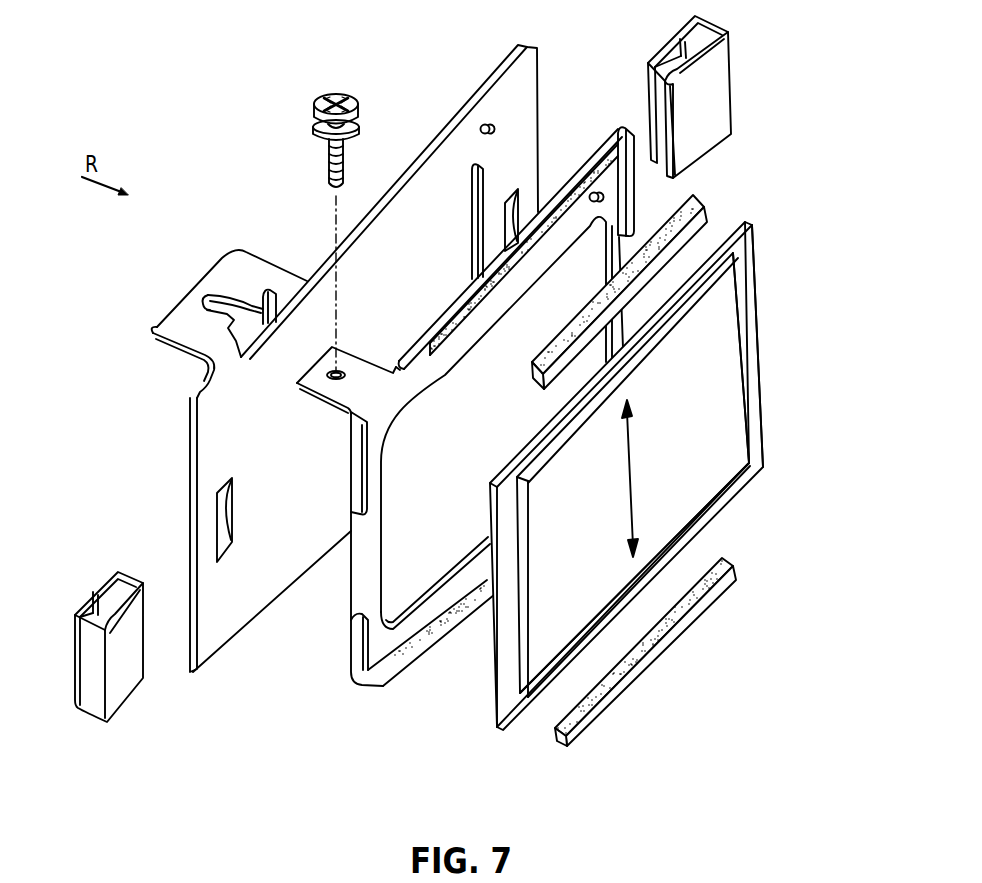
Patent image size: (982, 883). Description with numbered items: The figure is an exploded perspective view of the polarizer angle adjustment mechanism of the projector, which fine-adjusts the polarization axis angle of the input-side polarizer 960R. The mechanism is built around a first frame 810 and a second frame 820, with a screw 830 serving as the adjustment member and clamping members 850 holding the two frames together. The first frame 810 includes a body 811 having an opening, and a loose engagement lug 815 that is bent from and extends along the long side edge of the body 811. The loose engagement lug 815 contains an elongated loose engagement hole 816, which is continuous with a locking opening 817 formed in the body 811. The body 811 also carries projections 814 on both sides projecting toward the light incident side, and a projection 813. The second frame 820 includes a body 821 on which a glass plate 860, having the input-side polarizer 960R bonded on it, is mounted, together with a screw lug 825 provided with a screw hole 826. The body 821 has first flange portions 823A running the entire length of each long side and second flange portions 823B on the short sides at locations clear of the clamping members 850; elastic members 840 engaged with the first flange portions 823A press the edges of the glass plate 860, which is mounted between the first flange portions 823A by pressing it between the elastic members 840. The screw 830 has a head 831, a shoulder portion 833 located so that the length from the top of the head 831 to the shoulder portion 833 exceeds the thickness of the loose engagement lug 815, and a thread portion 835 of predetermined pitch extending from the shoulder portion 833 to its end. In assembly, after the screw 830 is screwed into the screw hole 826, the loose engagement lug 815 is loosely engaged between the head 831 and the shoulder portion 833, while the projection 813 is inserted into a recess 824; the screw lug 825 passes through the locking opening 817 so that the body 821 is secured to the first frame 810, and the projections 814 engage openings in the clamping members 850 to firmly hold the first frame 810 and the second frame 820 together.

The first frame 810 is at (304, 358).
The body 811 is at (217, 410).
The projection 813 is at (494, 132).
The projections 814 is at (217, 515).
The loose engagement lug 815 is at (197, 334).
The loose engagement hole 816 is at (215, 300).
The locking opening 817 is at (262, 300).
The second frame 820 is at (519, 416).
The body 821 is at (541, 261).
The first flange portions 823A is at (441, 328).
The second flange portions 823B is at (358, 467).
The recess 824 is at (593, 188).
The screw lug 825 is at (312, 381).
The screw hole 826 is at (345, 370).
The screw 830 is at (318, 196).
The head 831 is at (314, 106).
The shoulder portion 833 is at (313, 133).
The thread portion 835 is at (327, 173).
The elastic members 840 is at (707, 210).
The clamping members 850 is at (733, 85).
The glass plate 860 is at (645, 476).
The input-side polarizer 960R is at (707, 500).